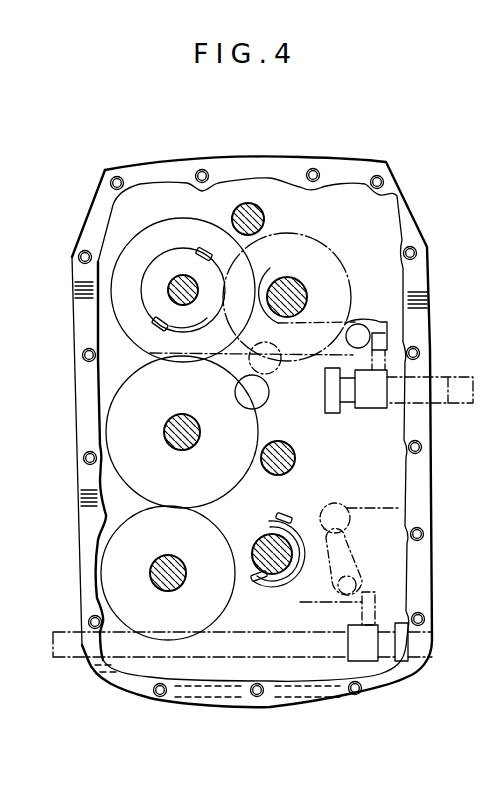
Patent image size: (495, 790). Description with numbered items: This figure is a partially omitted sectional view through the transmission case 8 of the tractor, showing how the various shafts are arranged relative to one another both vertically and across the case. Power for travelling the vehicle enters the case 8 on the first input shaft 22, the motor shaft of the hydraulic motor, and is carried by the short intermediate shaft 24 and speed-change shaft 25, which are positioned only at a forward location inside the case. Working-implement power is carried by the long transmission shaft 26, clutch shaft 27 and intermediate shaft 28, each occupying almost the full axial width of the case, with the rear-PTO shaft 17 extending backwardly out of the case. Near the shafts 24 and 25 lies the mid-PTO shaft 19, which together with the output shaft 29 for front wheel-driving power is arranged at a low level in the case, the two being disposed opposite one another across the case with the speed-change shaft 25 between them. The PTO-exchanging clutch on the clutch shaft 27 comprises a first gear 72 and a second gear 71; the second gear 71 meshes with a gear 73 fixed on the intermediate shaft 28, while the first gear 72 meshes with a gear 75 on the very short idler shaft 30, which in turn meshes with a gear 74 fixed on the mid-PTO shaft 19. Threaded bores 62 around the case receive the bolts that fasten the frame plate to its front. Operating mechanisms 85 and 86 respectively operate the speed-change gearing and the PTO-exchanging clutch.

The transmission case 8 is at (83, 402).
The rear-PTO shaft 17 is at (259, 403).
The mid-PTO shaft 19 is at (152, 570).
The first input shaft 22 is at (232, 371).
The intermediate shaft 24 is at (273, 472).
The speed-change shaft 25 is at (251, 586).
The transmission shaft 26 is at (258, 204).
The clutch shaft 27 is at (170, 286).
The intermediate shaft 28 is at (308, 292).
The output shaft 29 is at (400, 508).
The idler shaft 30 is at (165, 432).
The threaded bores 62 is at (119, 177).
The second gear 71 is at (197, 250).
The first gear 72 is at (112, 211).
The gear 73 is at (329, 241).
The gear 74 is at (97, 528).
The gear 75 is at (120, 378).
The operating mechanism 85 is at (353, 546).
The operating mechanism 86 is at (392, 326).